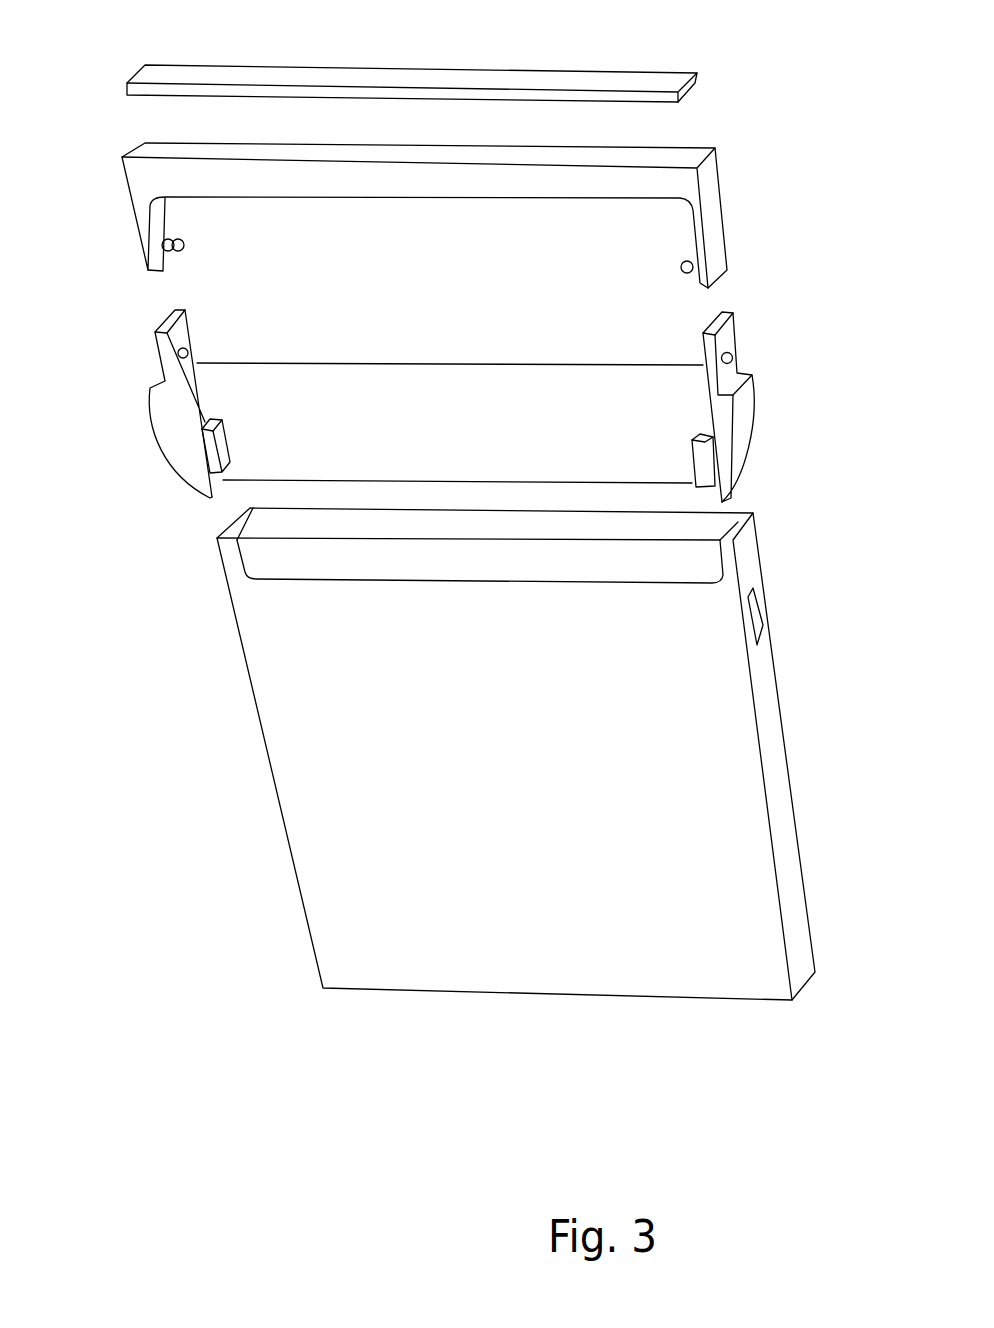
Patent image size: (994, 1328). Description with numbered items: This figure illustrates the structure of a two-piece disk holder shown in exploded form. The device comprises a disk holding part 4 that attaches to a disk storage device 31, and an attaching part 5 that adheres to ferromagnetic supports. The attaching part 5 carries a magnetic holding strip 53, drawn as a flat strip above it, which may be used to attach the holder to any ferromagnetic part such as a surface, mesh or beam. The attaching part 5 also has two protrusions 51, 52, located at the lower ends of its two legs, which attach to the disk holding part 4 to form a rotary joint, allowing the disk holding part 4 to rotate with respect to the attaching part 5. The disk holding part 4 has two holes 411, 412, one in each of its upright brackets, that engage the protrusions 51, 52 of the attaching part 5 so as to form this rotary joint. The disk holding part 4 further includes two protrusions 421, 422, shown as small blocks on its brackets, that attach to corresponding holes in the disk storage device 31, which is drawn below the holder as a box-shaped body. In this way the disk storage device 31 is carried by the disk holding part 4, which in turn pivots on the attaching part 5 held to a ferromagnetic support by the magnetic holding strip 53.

The magnetic holding strip 53 is at (658, 78).
The attaching part 5 is at (707, 180).
The protrusion 52 is at (168, 248).
The protrusion 51 is at (713, 287).
The disk holding part 4 is at (453, 406).
The hole 411 is at (733, 357).
The hole 412 is at (178, 355).
The protrusion 421 is at (713, 472).
The protrusion 422 is at (213, 462).
The disk storage device 31 is at (748, 748).